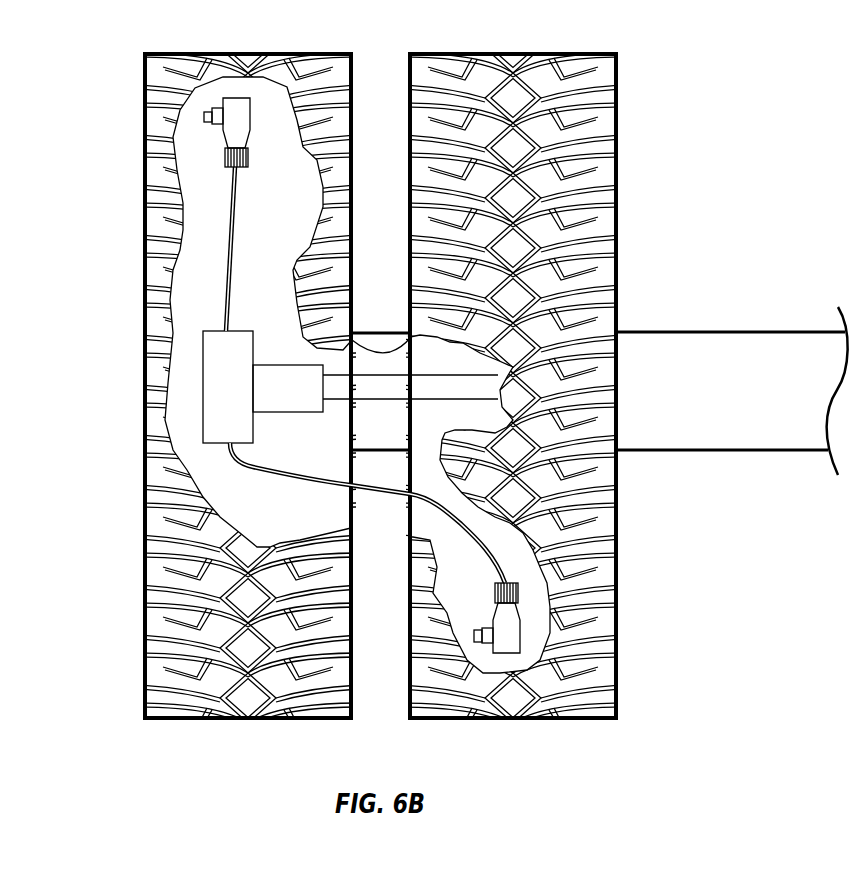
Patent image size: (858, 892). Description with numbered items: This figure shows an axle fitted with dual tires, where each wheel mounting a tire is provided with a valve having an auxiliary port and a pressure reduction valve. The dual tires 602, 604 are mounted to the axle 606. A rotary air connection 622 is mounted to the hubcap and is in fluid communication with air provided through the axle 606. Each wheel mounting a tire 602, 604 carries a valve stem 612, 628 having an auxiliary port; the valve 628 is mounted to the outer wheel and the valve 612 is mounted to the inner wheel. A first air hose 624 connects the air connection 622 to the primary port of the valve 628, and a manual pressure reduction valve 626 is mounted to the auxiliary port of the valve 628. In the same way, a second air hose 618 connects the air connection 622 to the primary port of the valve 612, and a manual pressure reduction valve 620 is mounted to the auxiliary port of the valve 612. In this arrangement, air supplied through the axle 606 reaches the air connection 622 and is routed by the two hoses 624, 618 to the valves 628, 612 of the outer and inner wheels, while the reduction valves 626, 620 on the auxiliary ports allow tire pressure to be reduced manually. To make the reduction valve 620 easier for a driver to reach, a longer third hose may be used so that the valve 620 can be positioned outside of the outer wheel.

The tire 602 is at (293, 53).
The tire 604 is at (514, 53).
The axle 606 is at (733, 332).
The valve stem 612 is at (508, 653).
The second air hose 618 is at (280, 480).
The manual pressure reduction valve 620 is at (480, 647).
The rotary air connection 622 is at (203, 387).
The first air hose 624 is at (223, 240).
The manual pressure reduction valve 626 is at (220, 127).
The valve stem 628 is at (235, 98).